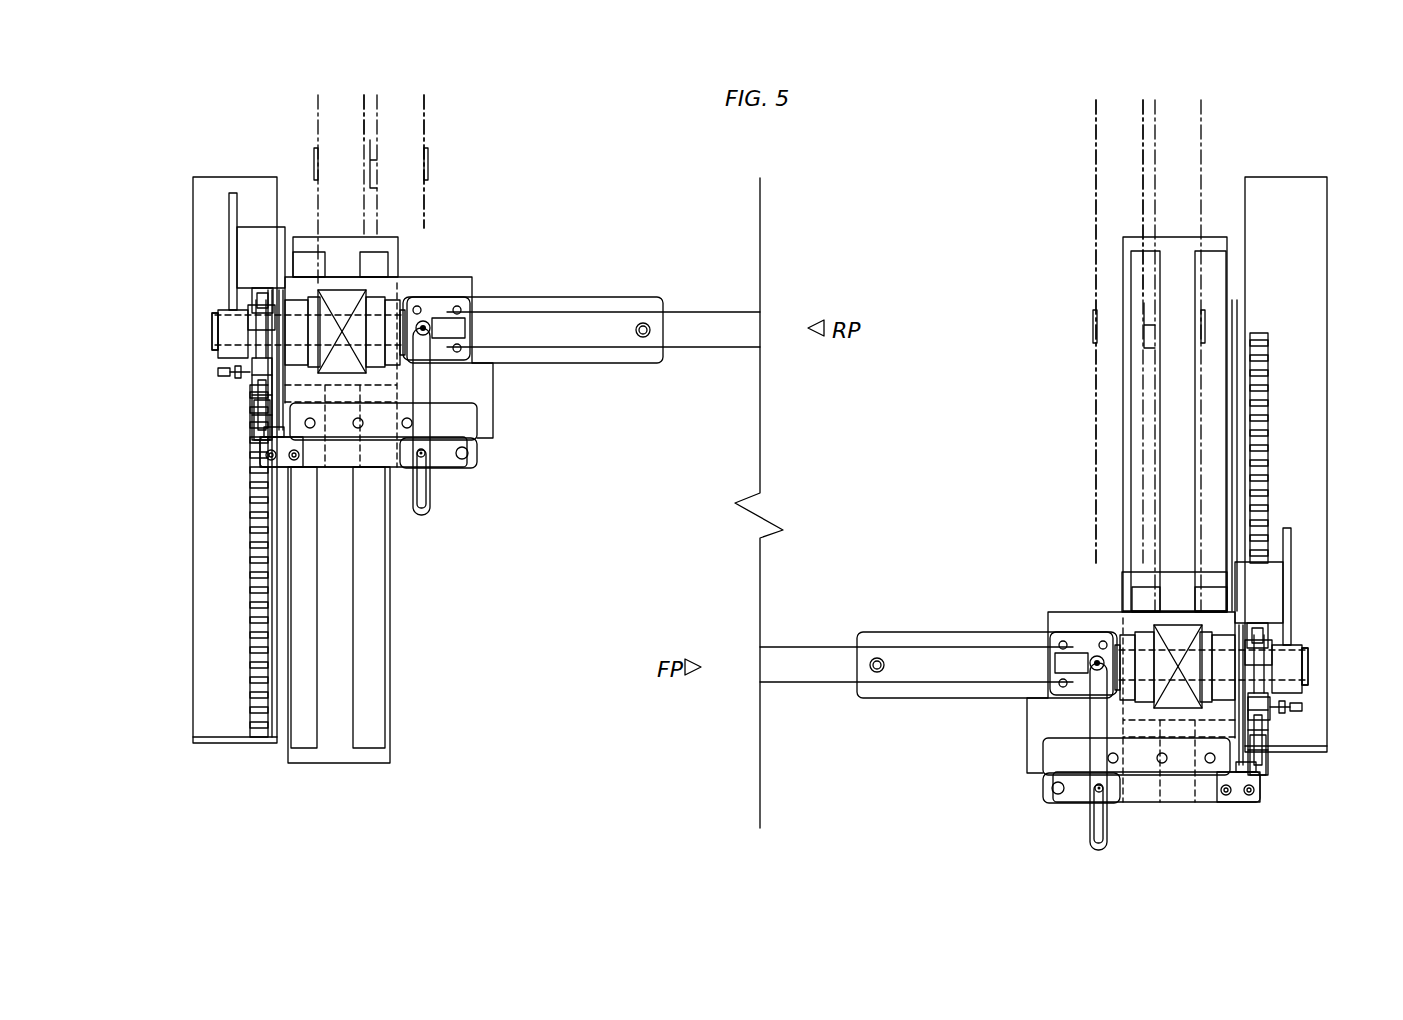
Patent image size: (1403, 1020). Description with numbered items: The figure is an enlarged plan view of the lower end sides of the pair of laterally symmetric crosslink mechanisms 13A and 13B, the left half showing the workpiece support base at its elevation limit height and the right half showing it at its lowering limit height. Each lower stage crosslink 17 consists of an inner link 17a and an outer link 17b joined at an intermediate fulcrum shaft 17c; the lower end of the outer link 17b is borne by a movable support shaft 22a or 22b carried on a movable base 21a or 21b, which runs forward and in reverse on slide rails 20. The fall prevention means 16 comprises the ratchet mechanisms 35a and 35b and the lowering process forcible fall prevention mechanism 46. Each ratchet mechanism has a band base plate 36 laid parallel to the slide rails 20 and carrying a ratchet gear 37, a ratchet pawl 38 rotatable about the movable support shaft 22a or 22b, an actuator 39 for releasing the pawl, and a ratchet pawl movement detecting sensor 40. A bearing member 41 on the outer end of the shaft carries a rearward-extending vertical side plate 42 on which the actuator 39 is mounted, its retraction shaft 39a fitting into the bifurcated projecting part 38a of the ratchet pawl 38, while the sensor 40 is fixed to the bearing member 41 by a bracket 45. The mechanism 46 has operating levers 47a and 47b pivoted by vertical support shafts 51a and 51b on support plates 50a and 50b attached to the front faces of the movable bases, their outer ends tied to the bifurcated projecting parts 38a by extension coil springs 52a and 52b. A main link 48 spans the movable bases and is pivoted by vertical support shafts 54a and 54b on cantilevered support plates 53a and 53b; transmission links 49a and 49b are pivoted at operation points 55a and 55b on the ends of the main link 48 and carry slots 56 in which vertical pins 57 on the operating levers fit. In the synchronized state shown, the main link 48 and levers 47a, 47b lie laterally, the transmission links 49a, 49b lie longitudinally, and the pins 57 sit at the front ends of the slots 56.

The crosslink mechanism 13A is at (437, 205).
The crosslink mechanism 13B is at (1086, 203).
The fall prevention means 16 is at (755, 527).
The ratchet mechanism 35a is at (275, 513).
The ratchet mechanism 35b is at (1237, 532).
The lower stage crosslink 17 is at (767, 356).
The inner link 17a is at (405, 135).
The outer link 17b is at (355, 113).
The intermediate fulcrum shaft 17c is at (428, 165).
The slide rail 20 is at (305, 648).
The movable base 21a is at (306, 285).
The movable base 21b is at (1140, 618).
The movable support shaft 22a is at (218, 333).
The movable support shaft 22b is at (1308, 660).
The band base plate 36 is at (215, 660).
The ratchet gear 37 is at (256, 590).
The ratchet pawl 38 is at (1248, 705).
The bifurcated projecting part 38a is at (262, 330).
The actuator 39 is at (255, 250).
The retraction shaft 39a is at (262, 303).
The ratchet pawl movement detecting sensor 40 is at (250, 385).
The bearing member 41 is at (228, 328).
The vertical side plate 42 is at (232, 217).
The bracket 45 is at (225, 372).
The lowering process forcible fall prevention mechanism 46 is at (714, 302).
The operating lever 47a is at (370, 455).
The operating lever 47b is at (1160, 765).
The main link 48 is at (720, 340).
The transmission link 49a is at (425, 398).
The transmission link 49b is at (1093, 733).
The support plate 50a is at (340, 467).
The support plate 50b is at (1200, 790).
The vertical support shaft 51a is at (468, 455).
The vertical support shaft 51b is at (1050, 788).
The extension coil spring 52a is at (258, 407).
The extension coil spring 52b is at (1262, 745).
The support plate 53a is at (588, 305).
The support plate 53b is at (933, 690).
The vertical support shaft 54a is at (643, 338).
The vertical support shaft 54b is at (875, 658).
The operation point 55a is at (425, 322).
The operation point 55b is at (1097, 662).
The slot 56 is at (420, 487).
The vertical pin 57 is at (422, 455).